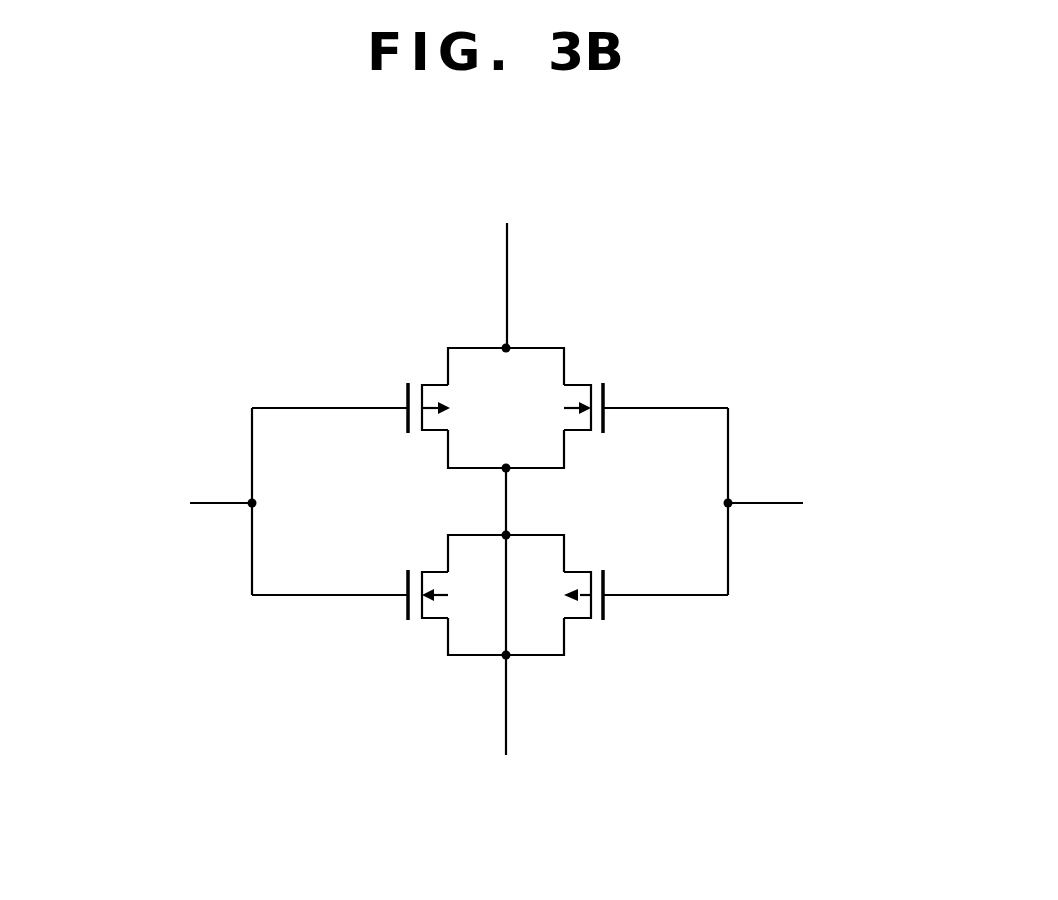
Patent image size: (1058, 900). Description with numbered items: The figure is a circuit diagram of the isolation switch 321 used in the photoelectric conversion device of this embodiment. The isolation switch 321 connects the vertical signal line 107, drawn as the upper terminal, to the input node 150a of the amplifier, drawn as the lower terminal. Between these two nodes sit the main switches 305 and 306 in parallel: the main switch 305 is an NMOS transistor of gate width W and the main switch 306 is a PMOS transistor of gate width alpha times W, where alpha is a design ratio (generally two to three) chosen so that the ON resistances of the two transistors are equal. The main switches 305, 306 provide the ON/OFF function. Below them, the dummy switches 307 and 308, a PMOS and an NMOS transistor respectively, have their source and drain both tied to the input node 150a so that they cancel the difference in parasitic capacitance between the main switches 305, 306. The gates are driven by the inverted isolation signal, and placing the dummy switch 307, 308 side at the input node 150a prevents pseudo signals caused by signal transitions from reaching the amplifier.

The vertical signal line 107 is at (507, 261).
The input node of the amplifier 150a is at (506, 730).
The main switch 305 is at (593, 376).
The main switch 306 is at (433, 371).
The dummy switch 307 is at (614, 608).
The dummy switch 308 is at (400, 608).
The isolation switch 321 is at (497, 538).